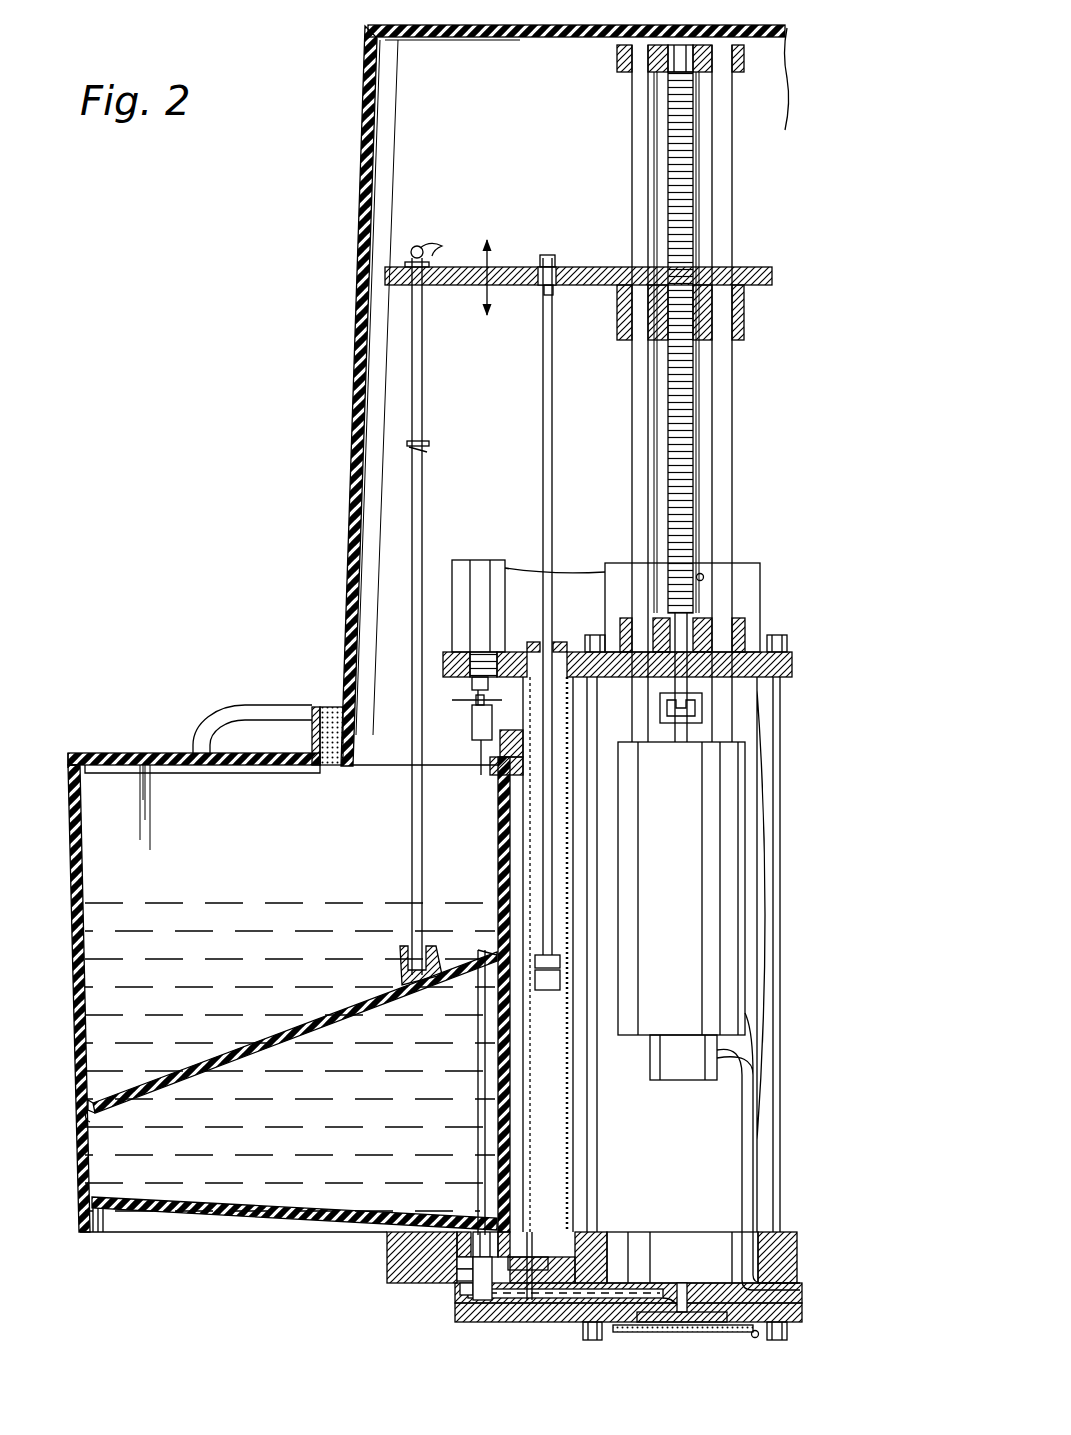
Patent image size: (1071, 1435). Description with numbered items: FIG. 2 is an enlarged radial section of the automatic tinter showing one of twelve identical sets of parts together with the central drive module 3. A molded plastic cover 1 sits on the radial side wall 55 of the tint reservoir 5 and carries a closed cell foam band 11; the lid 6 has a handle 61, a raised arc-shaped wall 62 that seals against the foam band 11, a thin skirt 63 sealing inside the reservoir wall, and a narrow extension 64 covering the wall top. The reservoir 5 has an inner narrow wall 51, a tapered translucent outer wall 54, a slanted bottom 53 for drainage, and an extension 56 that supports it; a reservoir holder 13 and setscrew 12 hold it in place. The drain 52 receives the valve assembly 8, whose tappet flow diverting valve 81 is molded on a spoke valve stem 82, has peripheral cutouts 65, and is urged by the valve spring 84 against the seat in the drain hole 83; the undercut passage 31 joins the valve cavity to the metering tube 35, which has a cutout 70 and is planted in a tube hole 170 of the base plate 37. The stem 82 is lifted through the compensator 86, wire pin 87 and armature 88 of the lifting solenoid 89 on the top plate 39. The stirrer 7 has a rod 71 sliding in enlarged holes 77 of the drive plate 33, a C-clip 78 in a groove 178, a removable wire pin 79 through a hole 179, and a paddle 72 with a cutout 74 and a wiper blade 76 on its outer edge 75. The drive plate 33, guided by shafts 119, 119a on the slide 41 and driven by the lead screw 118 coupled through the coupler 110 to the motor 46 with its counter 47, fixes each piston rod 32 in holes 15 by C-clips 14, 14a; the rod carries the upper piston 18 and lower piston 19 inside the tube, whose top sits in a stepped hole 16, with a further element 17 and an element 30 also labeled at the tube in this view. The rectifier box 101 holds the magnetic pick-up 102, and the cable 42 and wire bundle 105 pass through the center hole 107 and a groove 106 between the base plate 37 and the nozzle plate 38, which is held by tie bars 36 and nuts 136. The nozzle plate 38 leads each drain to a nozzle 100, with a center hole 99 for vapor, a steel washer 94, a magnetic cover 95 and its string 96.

The cover 1 is at (357, 195).
The central drive module 3 is at (607, 215).
The tint reservoir 5 is at (120, 790).
The lid 6 is at (176, 750).
The stirrer 7 is at (397, 858).
The valve assembly 8 is at (490, 1211).
The closed cell foam band 11 is at (333, 712).
The setscrew 12 is at (492, 763).
The reservoir holder 13 is at (507, 738).
The C-clip 14 is at (553, 292).
The C-clip 14a is at (550, 265).
The holes for piston rods 15 is at (536, 275).
The stepped hole 16 is at (532, 644).
The bearing block 17 is at (560, 644).
The upper piston 18 is at (560, 960).
The lower piston 19 is at (560, 985).
The screen tube 30 is at (572, 945).
The undercut passage 31 is at (528, 1300).
The piston rod 32 is at (553, 505).
The drive plate 33 is at (385, 277).
The metering tube 35 is at (573, 1095).
The tie bar 36 is at (596, 1128).
The base plate 37 is at (387, 1246).
The nozzle plate 38 is at (466, 1322).
The top plate 39 is at (758, 650).
The slide 41 is at (747, 628).
The cable 42 is at (750, 1135).
The reversible DC gear motor 46 is at (697, 876).
The Hall-effect rpm counter 47 is at (689, 1068).
The inner narrow wall 51 is at (498, 868).
The drain 52 is at (468, 1211).
The slanted bottom 53 is at (200, 1235).
The outer wall 54 is at (72, 890).
The side wall 55 is at (272, 875).
The extension 56 is at (108, 1233).
The handle 61 is at (250, 707).
The raised arc-shaped wall 62 is at (311, 720).
The thin skirt 63 is at (243, 775).
The narrow extension 64 is at (68, 757).
The peripheral cutouts 65 is at (468, 1293).
The cutout 70 is at (532, 1272).
The stirrer rod 71 is at (423, 503).
The paddle 72 is at (140, 1078).
The cutout 74 is at (476, 948).
The outer edge 75 is at (92, 1102).
The wiper blade 76 is at (88, 1122).
The holes for stirrer rods 77 is at (425, 290).
The C-clip 78 is at (432, 446).
The removable wire pin 79 is at (414, 247).
The tappet flow diverting valve 81 is at (484, 1300).
The valve stem 82 is at (478, 1092).
The drain hole 83 is at (465, 1283).
The valve spring 84 is at (455, 1265).
The compensator 86 is at (470, 715).
The removable wire pin 87 is at (455, 700).
The armature 88 is at (471, 683).
The lifting solenoid 89 is at (478, 565).
The steel washer 94 is at (722, 1322).
The flexible magnetic cover 95 is at (690, 1332).
The string 96 is at (759, 1337).
The center hole 99 is at (683, 1290).
The nozzle 100 is at (680, 1303).
The rectifier box 101 is at (762, 565).
The magnetic pick-up 102 is at (703, 574).
The bundle of wires 105 is at (765, 890).
The groove 106 is at (796, 1280).
The center hole 107 is at (665, 1250).
The coupler 110 is at (702, 708).
The lead screw 118 is at (700, 374).
The ground steel shaft 119 is at (630, 400).
The ground steel shaft 119a is at (734, 402).
The nut 136 is at (595, 635).
The tube hole 170 is at (567, 1237).
The groove 178 is at (428, 453).
The hole 179 is at (428, 247).